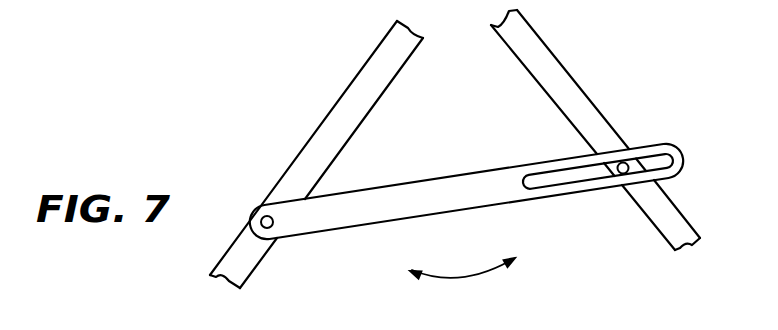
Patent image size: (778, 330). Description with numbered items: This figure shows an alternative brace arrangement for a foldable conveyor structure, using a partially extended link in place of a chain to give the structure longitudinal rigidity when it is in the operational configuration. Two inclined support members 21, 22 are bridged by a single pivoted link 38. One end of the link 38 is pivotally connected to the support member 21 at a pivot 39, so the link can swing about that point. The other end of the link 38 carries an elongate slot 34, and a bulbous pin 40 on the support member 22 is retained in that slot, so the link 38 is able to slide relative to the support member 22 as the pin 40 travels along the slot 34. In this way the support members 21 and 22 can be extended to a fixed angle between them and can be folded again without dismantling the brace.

The support member 21 is at (250, 256).
The support member 22 is at (670, 214).
The elongate slot 34 is at (567, 186).
The pivoted link 38 is at (433, 200).
The pivot 39 is at (266, 214).
The bulbous pin 40 is at (630, 158).